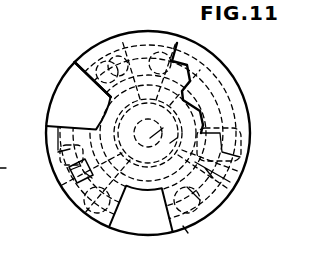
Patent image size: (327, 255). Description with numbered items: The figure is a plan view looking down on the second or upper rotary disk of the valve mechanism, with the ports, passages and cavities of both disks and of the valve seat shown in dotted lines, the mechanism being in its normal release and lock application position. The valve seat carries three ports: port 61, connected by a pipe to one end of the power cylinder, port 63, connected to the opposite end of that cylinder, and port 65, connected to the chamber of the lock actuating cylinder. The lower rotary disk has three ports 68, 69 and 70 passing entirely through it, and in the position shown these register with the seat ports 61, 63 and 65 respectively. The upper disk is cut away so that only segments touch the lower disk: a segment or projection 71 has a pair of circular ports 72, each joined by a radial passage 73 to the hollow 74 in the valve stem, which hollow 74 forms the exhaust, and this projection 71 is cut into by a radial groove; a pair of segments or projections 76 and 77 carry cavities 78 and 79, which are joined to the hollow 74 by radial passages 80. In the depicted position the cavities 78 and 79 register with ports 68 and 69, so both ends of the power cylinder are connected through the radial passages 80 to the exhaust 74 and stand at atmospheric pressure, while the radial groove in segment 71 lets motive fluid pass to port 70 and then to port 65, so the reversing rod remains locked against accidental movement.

The port 61 is at (152, 60).
The port 63 is at (232, 165).
The port 65 is at (88, 175).
The port 68 is at (154, 52).
The port 69 is at (219, 185).
The port 70 is at (80, 170).
The segment or projection 71 is at (47, 126).
The circular ports 72 is at (58, 152).
The radial passage 73 is at (109, 147).
The hollow 74 is at (148, 133).
The segment or projection 76 is at (75, 62).
The segment or projection 77 is at (197, 235).
The cavity 78 is at (112, 56).
The cavity 79 is at (204, 198).
The radial passages 80 is at (158, 116).